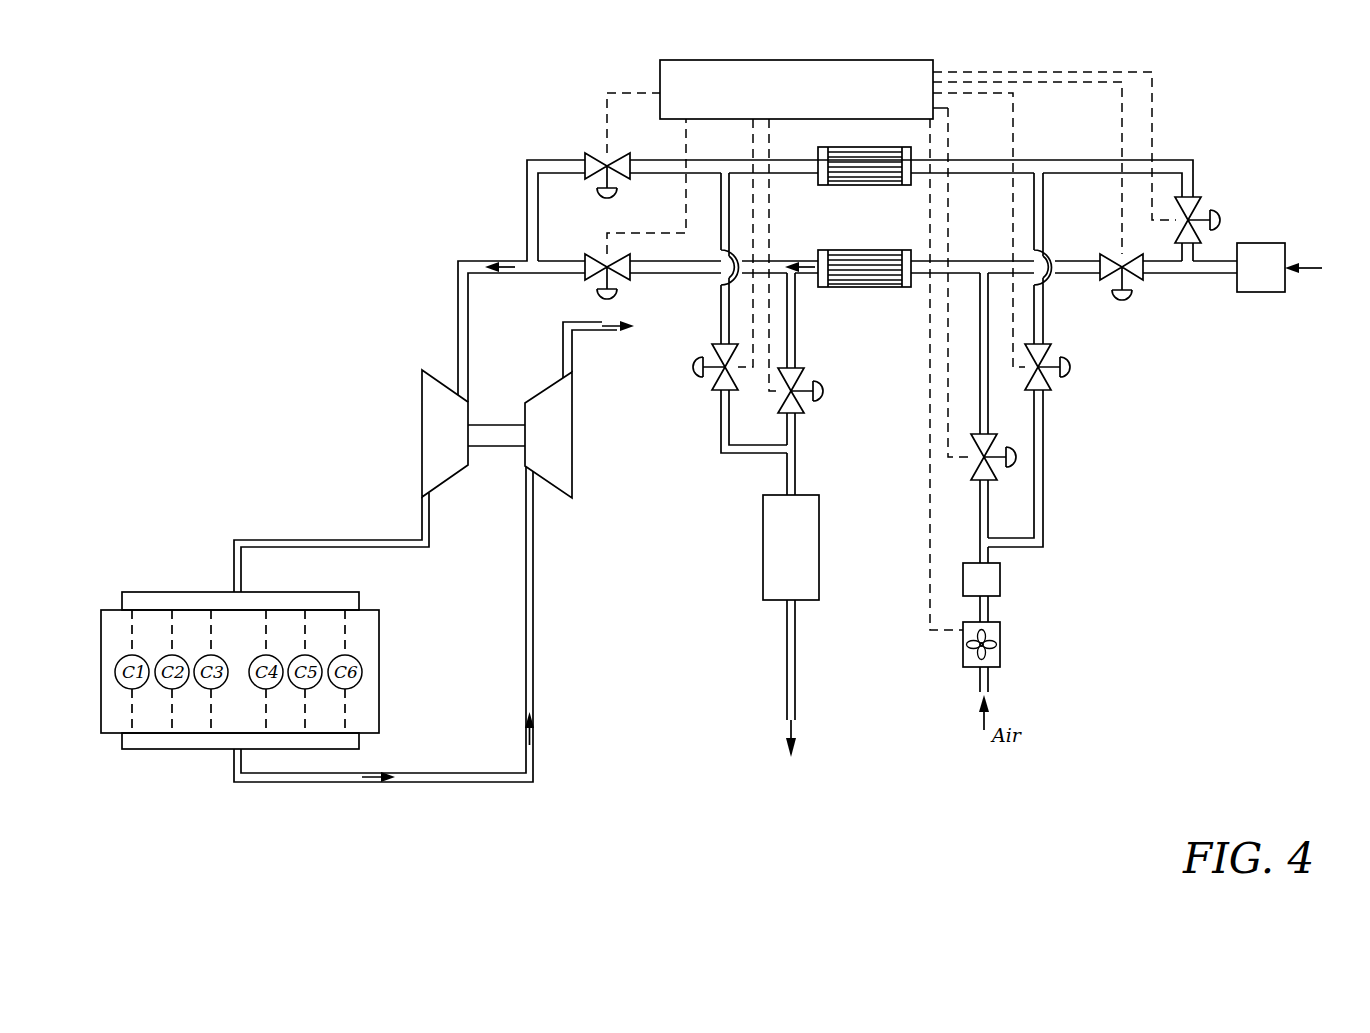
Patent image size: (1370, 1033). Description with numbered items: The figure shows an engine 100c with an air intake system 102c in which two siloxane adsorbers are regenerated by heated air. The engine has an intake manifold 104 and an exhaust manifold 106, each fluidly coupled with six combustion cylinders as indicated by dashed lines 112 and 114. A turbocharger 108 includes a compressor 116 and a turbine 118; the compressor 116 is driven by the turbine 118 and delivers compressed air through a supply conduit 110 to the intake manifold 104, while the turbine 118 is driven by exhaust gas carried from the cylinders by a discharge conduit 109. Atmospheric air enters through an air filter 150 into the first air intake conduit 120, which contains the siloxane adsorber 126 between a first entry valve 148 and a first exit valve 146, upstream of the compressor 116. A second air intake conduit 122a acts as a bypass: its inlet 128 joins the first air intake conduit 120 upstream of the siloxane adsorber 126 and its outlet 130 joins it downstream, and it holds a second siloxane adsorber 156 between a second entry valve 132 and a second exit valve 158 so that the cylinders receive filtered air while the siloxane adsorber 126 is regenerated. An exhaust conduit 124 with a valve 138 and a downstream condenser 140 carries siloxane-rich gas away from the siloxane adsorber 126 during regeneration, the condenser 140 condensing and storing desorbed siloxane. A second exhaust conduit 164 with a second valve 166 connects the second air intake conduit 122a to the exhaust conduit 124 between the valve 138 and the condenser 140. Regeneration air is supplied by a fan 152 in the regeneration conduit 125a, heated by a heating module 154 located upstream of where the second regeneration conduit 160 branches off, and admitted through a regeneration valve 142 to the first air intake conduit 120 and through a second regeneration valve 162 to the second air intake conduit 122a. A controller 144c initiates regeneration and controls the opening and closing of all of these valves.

The engine 100c is at (238, 118).
The air intake system 102c is at (1262, 100).
The intake manifold 104 is at (156, 592).
The exhaust manifold 106 is at (160, 750).
The turbocharger 108 is at (596, 530).
The discharge conduit 109 is at (398, 770).
The supply conduit 110 is at (262, 538).
The dashed lines 112 is at (345, 637).
The dashed lines 114 is at (345, 708).
The compressor 116 is at (422, 410).
The turbine 118 is at (572, 410).
The first air intake conduit 120 is at (1220, 283).
The second air intake conduit 122a is at (1180, 157).
The exhaust conduit 124 is at (787, 660).
The regeneration conduit 125a is at (986, 503).
The siloxane adsorber 126 is at (868, 288).
The inlet 128 is at (1187, 268).
The outlet 130 is at (527, 262).
The second entry valve 132 is at (1203, 210).
The valve 138 is at (805, 410).
The condenser 140 is at (763, 565).
The regeneration valve 142 is at (968, 478).
The controller 144c is at (891, 345).
The first exit valve 146 is at (630, 278).
The first entry valve 148 is at (1140, 281).
The air filter 150 is at (1290, 267).
The fan 152 is at (963, 656).
The heating module 154 is at (1000, 580).
The second siloxane adsorber 156 is at (868, 186).
The second exit valve 158 is at (598, 157).
The second regeneration conduit 160 is at (1044, 450).
The second regeneration valve 162 is at (1051, 385).
The second exhaust conduit 164 is at (720, 412).
The second valve 166 is at (712, 380).